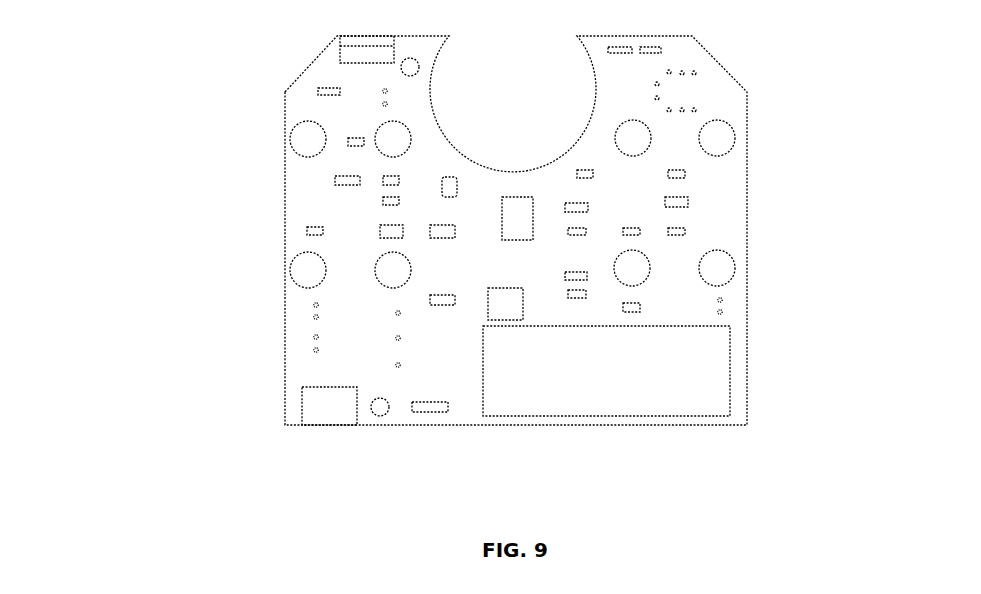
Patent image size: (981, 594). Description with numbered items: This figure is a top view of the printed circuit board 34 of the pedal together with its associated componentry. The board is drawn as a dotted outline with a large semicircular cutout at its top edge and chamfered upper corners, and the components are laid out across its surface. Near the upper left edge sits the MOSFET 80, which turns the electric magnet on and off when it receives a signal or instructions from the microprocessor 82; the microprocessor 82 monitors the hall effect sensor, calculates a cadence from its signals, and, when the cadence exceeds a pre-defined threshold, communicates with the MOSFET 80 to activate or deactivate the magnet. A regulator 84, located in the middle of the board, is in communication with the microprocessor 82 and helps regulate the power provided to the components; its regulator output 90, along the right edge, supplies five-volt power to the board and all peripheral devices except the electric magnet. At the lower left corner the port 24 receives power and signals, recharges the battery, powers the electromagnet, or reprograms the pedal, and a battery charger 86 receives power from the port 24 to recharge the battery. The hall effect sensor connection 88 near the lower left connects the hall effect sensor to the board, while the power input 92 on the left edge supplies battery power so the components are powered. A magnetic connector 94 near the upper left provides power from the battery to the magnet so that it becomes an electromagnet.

The printed circuit board 34 is at (148, 420).
The MOSFET 80 is at (350, 48).
The microprocessor 82 is at (710, 396).
The regulator 84 is at (533, 221).
The battery charger 86 is at (441, 188).
The hall effect sensor connection 88 is at (379, 382).
The regulator output 90 is at (750, 305).
The power input 92 is at (297, 313).
The magnetic connector 94 is at (362, 99).
The port 24 is at (317, 403).